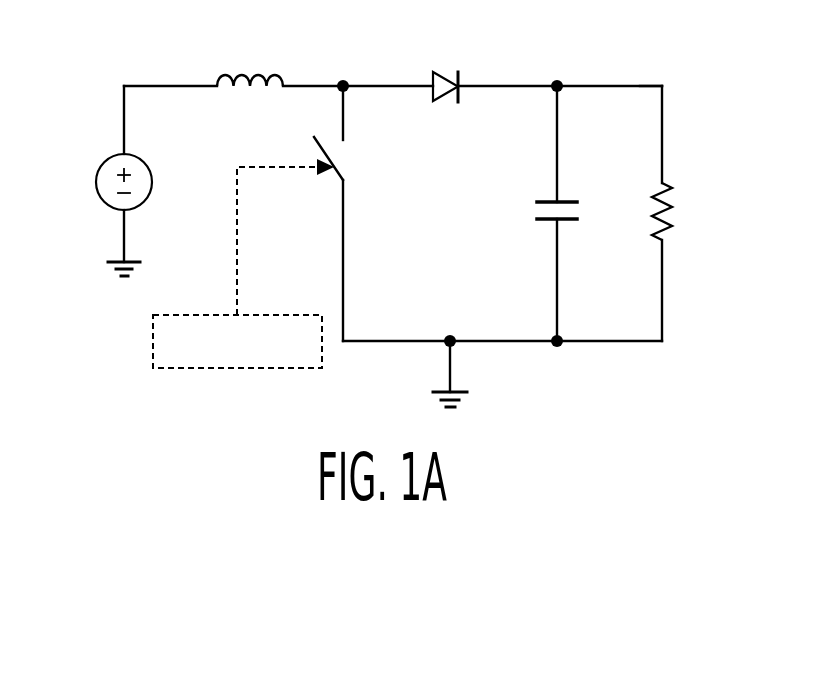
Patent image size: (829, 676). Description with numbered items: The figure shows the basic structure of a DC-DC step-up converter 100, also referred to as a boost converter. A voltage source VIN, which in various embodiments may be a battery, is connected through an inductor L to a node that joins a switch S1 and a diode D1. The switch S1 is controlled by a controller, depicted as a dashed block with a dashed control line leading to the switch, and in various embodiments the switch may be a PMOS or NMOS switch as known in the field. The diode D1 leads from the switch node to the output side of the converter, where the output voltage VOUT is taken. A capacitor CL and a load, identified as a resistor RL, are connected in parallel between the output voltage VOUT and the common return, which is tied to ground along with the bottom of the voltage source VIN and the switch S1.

The DC-DC step-up converter 100 is at (610, 42).
The inductor L is at (250, 64).
The diode D1 is at (446, 69).
The switch S1 is at (346, 213).
The voltage source VIN is at (103, 180).
The output voltage VOUT is at (678, 74).
The capacitor CL is at (537, 210).
The load RL is at (681, 211).